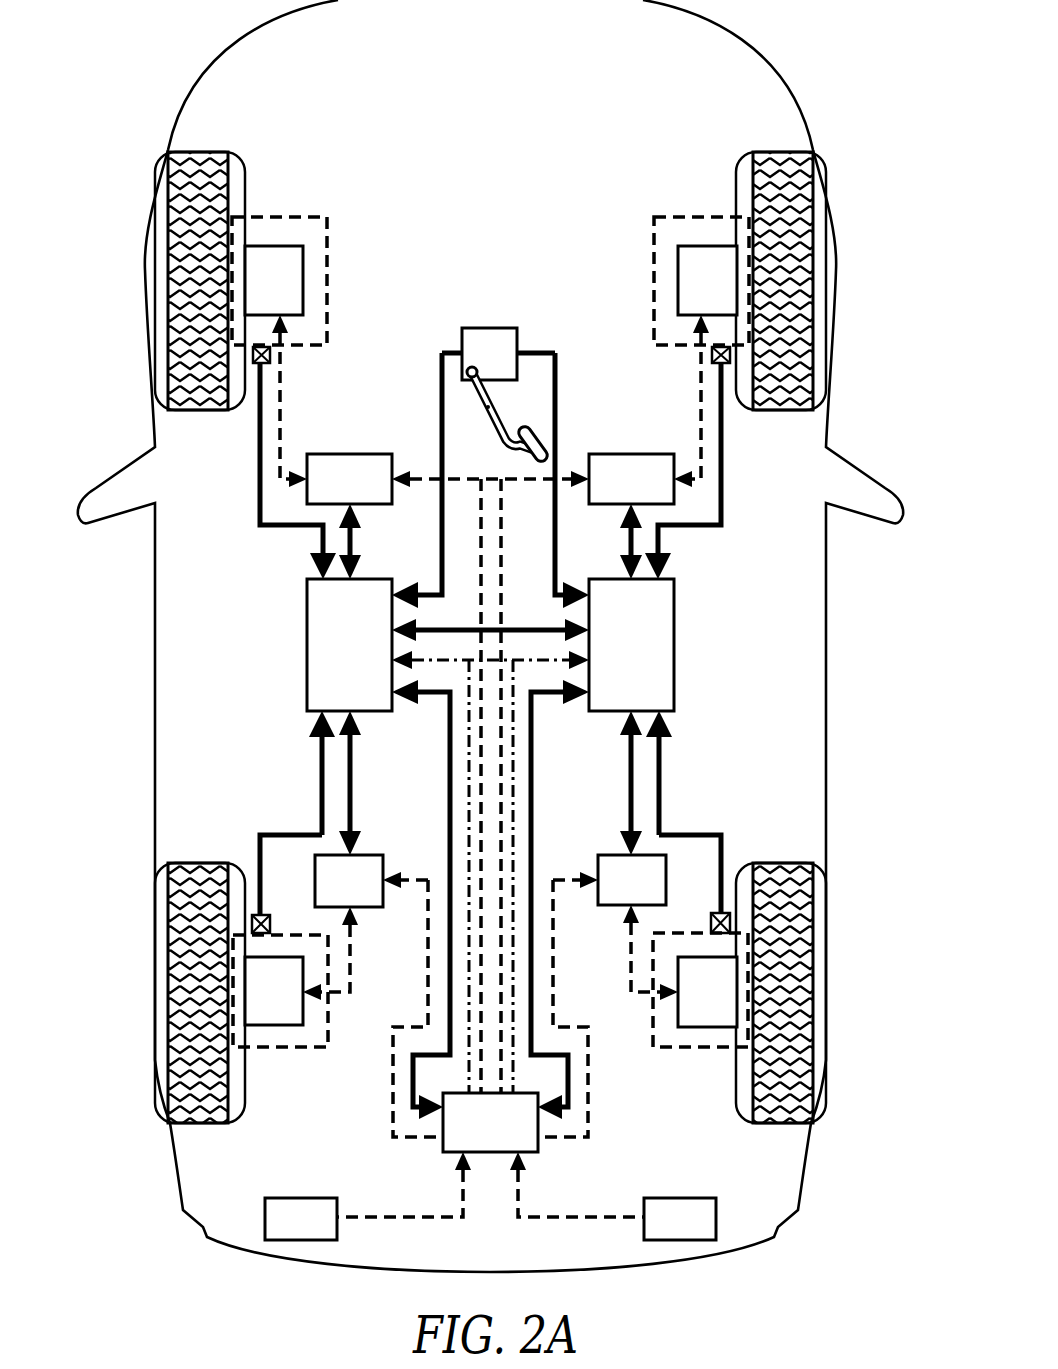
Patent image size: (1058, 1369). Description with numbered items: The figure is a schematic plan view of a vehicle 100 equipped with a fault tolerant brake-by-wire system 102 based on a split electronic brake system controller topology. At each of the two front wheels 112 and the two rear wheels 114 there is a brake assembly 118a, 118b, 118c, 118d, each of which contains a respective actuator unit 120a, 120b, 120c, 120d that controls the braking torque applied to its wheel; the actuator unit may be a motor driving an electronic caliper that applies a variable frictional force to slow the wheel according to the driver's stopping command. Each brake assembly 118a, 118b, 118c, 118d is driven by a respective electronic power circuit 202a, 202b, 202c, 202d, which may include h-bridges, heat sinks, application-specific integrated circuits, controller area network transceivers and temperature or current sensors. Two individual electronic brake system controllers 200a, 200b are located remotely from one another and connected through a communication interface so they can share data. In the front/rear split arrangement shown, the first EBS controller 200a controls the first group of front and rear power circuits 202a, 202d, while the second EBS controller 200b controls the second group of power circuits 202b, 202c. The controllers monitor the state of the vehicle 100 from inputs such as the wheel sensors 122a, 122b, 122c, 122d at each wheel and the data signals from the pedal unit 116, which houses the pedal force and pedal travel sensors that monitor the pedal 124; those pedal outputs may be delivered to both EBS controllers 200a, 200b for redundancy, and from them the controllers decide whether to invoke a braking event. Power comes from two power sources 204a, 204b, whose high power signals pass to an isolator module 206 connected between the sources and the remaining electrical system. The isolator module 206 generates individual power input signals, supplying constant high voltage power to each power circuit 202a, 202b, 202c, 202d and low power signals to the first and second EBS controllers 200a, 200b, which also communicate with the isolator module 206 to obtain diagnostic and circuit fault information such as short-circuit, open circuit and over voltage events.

The vehicle 100 is at (850, 640).
The fault tolerant BBW system 102 is at (478, 150).
The wheel 112 is at (145, 265).
The wheel 114 is at (145, 1027).
The pedal unit 116 is at (495, 345).
The brake assembly 118a is at (334, 280).
The brake assembly 118b is at (646, 280).
The brake assembly 118c is at (697, 1060).
The brake assembly 118d is at (284, 1060).
The actuator unit 120a is at (283, 258).
The actuator unit 120b is at (700, 258).
The actuator unit 120c is at (700, 1012).
The actuator unit 120d is at (283, 1012).
The wheel sensor 122a is at (262, 370).
The wheel sensor 122b is at (720, 370).
The wheel sensor 122c is at (719, 912).
The wheel sensor 122d is at (262, 912).
The pedal 124 is at (472, 405).
The first EBS controller 200a is at (346, 632).
The second EBS controller 200b is at (635, 632).
The electronic power circuit 202a is at (347, 470).
The electronic power circuit 202b is at (635, 470).
The electronic power circuit 202c is at (655, 880).
The electronic power circuit 202d is at (325, 880).
The power source 204a is at (300, 1222).
The power source 204b is at (685, 1222).
The isolator module 206 is at (455, 1105).